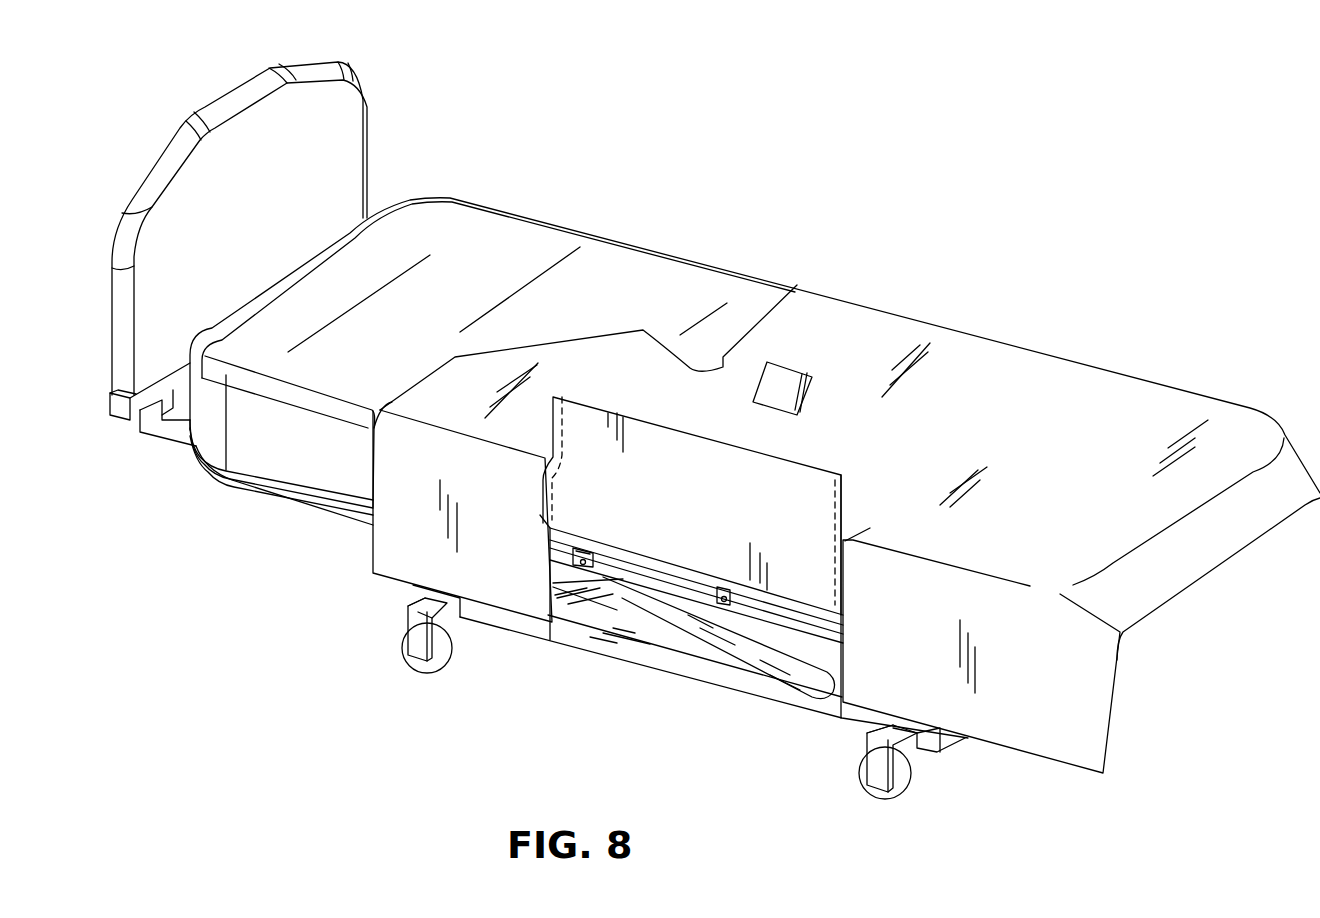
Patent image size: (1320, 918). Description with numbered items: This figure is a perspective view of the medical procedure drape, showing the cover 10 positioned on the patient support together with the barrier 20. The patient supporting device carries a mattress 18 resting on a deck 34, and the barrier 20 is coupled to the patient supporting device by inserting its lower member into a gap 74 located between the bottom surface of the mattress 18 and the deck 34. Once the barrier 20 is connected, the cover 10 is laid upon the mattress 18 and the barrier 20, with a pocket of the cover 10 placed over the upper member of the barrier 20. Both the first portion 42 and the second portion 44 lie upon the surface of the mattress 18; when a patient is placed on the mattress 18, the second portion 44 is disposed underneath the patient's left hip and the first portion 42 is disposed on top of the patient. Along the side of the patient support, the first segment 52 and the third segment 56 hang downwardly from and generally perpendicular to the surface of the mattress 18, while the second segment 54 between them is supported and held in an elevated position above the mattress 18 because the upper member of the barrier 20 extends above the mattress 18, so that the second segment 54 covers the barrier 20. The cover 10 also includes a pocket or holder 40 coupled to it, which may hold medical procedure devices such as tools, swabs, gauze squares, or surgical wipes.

The cover 10 is at (988, 328).
The mattress 18 is at (250, 430).
The barrier 20 is at (787, 600).
The deck 34 is at (277, 478).
The pocket or holder 40 is at (788, 383).
The first portion 42 is at (1137, 402).
The second portion 44 is at (617, 347).
The first segment 52 is at (493, 567).
The second segment 54 is at (687, 530).
The third segment 56 is at (1057, 737).
The gap 74 is at (338, 477).